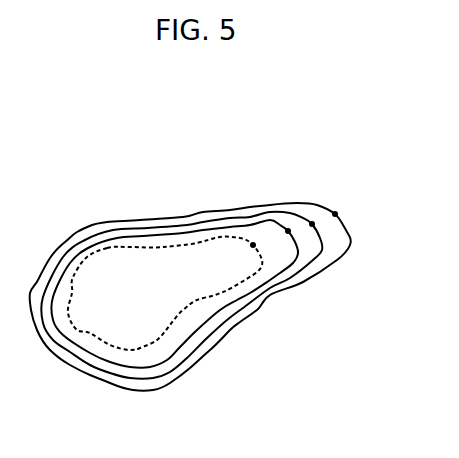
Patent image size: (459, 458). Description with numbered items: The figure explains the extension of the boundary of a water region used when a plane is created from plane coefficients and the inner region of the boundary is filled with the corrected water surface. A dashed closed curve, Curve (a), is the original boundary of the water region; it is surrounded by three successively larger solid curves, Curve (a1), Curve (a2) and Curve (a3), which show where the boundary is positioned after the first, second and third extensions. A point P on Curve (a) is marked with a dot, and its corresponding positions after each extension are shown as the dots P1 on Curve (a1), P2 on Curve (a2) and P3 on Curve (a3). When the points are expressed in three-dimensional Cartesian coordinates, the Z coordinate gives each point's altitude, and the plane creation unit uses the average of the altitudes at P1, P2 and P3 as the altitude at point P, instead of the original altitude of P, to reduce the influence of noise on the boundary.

The point on the Curve (a) P is at (253, 245).
The point on the Curve (a1) P1 is at (288, 231).
The point on the Curve (a2) P2 is at (312, 224).
The point on the Curve (a3) P3 is at (335, 214).